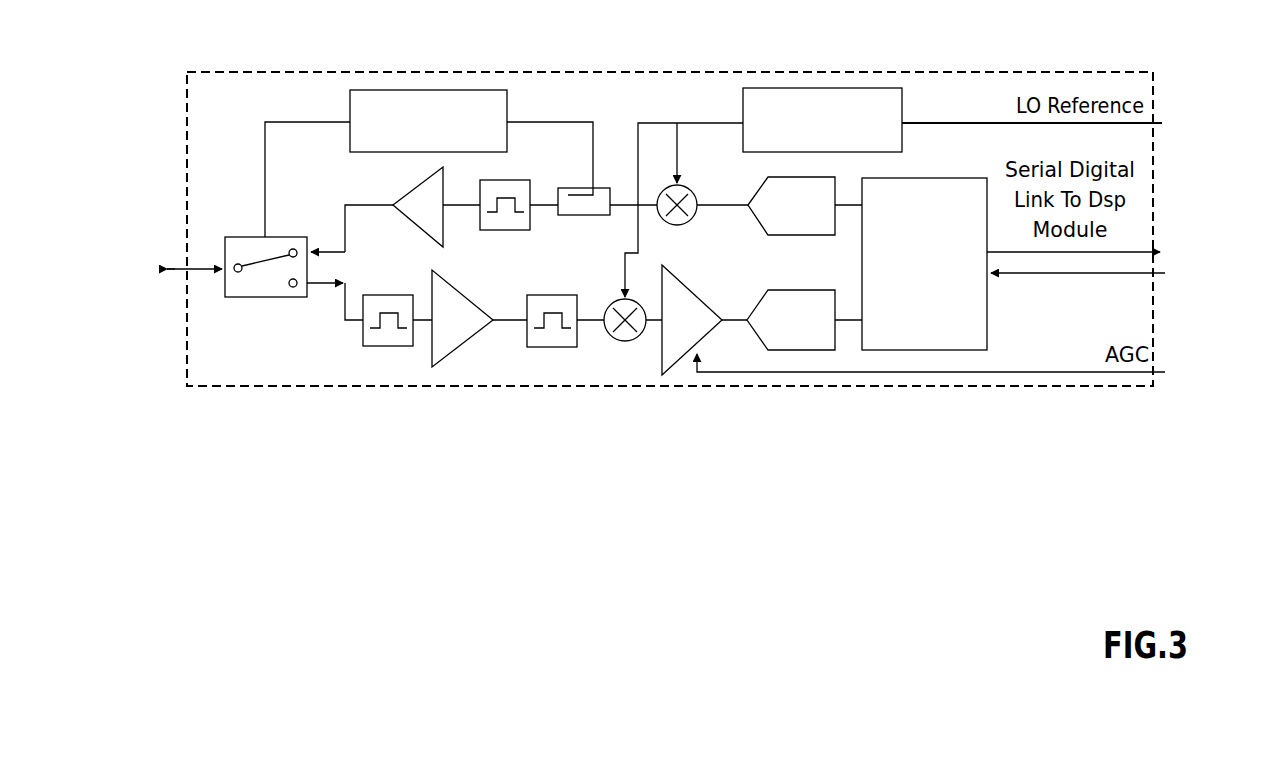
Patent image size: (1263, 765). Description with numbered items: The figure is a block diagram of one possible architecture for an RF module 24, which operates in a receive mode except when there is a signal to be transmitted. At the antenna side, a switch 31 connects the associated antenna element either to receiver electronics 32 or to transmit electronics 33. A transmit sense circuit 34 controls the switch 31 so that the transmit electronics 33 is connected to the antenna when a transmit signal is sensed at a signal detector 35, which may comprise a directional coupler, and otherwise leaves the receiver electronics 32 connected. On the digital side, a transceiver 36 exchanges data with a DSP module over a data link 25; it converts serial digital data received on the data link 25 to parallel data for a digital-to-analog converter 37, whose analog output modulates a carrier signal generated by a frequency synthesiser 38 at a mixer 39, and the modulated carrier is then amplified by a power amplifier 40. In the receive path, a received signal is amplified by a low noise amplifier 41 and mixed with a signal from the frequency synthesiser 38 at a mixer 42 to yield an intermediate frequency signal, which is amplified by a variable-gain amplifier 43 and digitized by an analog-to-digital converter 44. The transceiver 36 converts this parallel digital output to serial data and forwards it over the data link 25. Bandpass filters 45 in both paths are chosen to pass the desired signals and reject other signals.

The RF module 24 is at (188, 412).
The data link 25 is at (1170, 258).
The switch 31 is at (240, 237).
The receiver electronics 32 is at (345, 326).
The transmit electronics 33 is at (330, 195).
The transmit sense circuit 34 is at (440, 88).
The signal detector 35 is at (600, 188).
The transceiver 36 is at (938, 178).
The digital-to-analog converter 37 is at (828, 177).
The frequency synthesiser 38 is at (837, 88).
The mixer 39 is at (688, 180).
The power amplifier 40 is at (410, 190).
The low noise amplifier 41 is at (455, 367).
The mixer 42 is at (625, 341).
The variable-gain amplifier 43 is at (712, 337).
The analog-to-digital converter 44 is at (823, 350).
The bandpass filters 45 is at (505, 230).